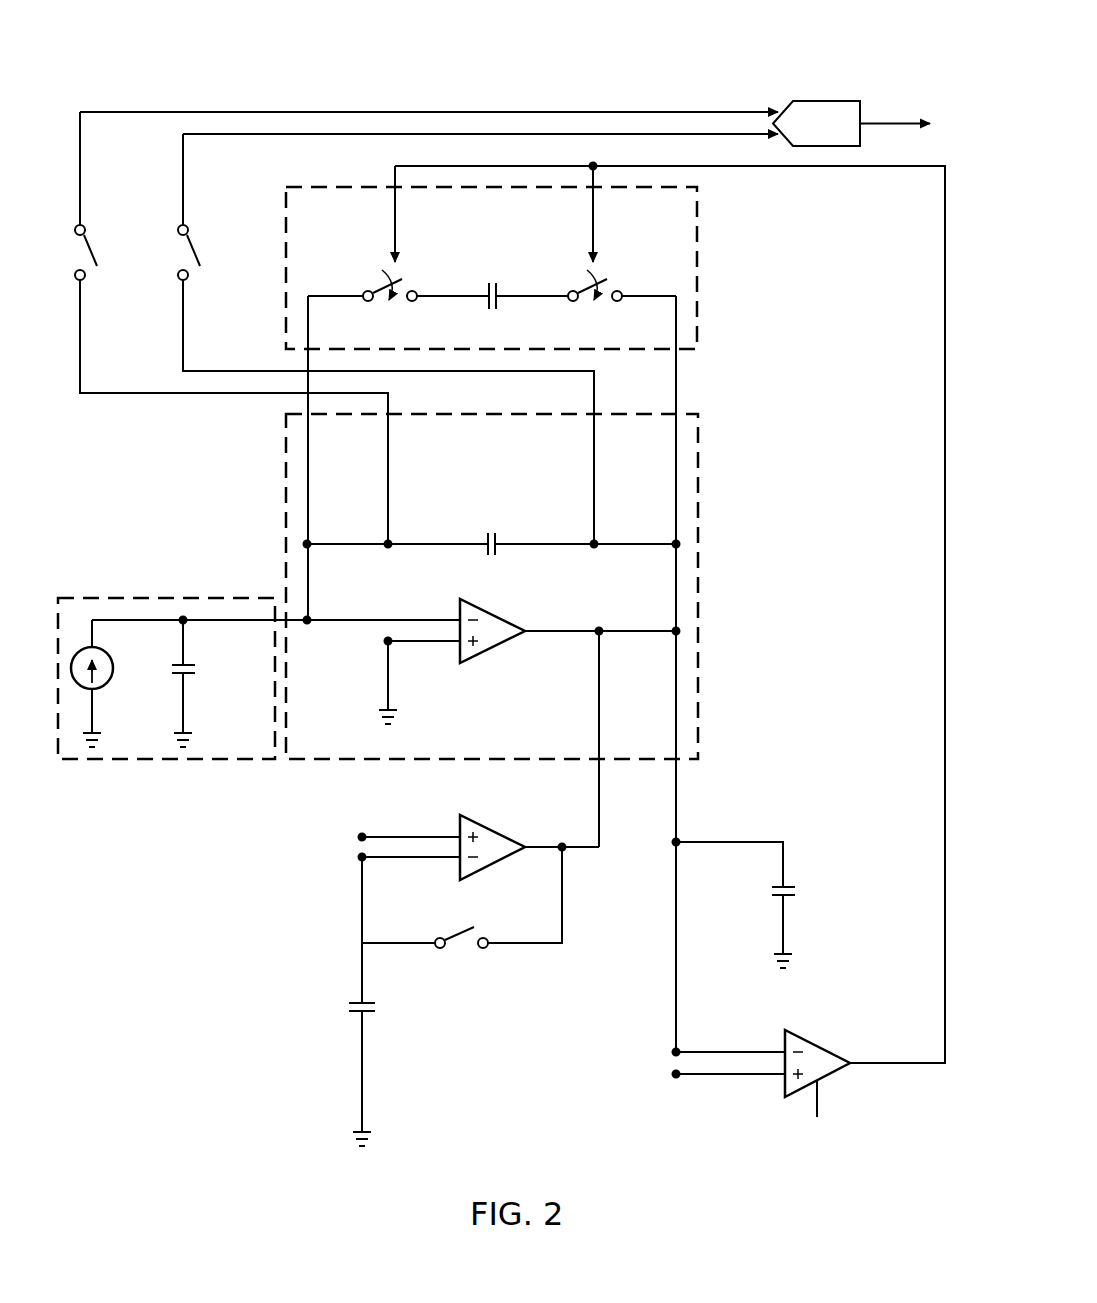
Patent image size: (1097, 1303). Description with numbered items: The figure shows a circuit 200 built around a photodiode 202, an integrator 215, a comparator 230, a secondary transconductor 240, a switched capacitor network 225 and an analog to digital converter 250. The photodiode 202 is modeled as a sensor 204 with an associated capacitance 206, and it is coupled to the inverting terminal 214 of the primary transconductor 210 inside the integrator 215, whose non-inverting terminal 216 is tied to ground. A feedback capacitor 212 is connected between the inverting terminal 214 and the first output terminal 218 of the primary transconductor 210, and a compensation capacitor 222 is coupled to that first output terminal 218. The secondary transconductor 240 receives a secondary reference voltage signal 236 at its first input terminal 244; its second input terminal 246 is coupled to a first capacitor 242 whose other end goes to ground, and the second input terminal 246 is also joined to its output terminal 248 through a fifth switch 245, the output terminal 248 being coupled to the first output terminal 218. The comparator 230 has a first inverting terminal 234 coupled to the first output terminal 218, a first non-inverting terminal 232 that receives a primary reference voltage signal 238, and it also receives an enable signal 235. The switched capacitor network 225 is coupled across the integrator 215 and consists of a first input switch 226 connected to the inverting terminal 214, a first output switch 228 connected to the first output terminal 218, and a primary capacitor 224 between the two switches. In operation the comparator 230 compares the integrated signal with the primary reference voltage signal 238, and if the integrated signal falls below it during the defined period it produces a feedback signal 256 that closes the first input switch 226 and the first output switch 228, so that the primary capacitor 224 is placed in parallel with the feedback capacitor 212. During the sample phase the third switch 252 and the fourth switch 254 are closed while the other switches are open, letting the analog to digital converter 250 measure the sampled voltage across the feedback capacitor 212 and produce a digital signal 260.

The circuit 200 is at (306, 72).
The photodiode 202 is at (138, 595).
The sensor 204 is at (107, 688).
The capacitance Cs 206 is at (197, 670).
The primary transconductor 210 is at (517, 597).
The feedback capacitor CF 212 is at (490, 530).
The inverting terminal 214 is at (312, 624).
The integrator 215 is at (703, 573).
The non-inverting terminal 216 is at (392, 646).
The first output terminal 218 is at (604, 628).
The compensation capacitor Cc 222 is at (798, 890).
The primary capacitor Cp 224 is at (490, 282).
The switched capacitor network 225 is at (703, 266).
The first input switch S1 226 is at (380, 289).
The first output switch S2 228 is at (586, 289).
The comparator 230 is at (833, 1048).
The first non-inverting terminal 232 is at (672, 1080).
The first inverting terminal 234 is at (672, 1048).
The enable signal EN 235 is at (820, 1096).
The secondary reference voltage signal Vrefs 236 is at (415, 835).
The primary reference voltage signal Vrefp 238 is at (730, 1077).
The secondary transconductor 240 is at (490, 866).
The first capacitor CA 242 is at (348, 1011).
The first input terminal 244 is at (358, 832).
The fifth switch S5 245 is at (452, 931).
The second input terminal 246 is at (356, 860).
The output terminal 248 is at (558, 843).
The analog to digital converter (ADC) 250 is at (828, 100).
The third switch S3 252 is at (97, 250).
The fourth switch S4 254 is at (200, 250).
The feedback signal 256 is at (915, 1066).
The digital signal 260 is at (893, 120).